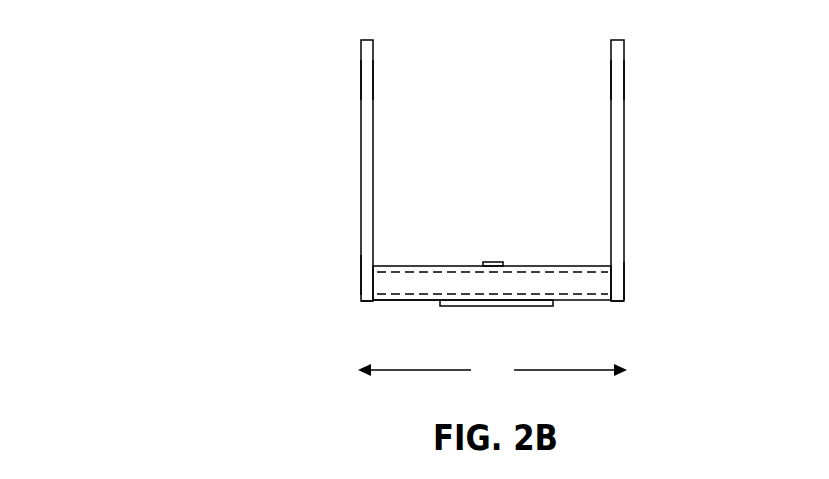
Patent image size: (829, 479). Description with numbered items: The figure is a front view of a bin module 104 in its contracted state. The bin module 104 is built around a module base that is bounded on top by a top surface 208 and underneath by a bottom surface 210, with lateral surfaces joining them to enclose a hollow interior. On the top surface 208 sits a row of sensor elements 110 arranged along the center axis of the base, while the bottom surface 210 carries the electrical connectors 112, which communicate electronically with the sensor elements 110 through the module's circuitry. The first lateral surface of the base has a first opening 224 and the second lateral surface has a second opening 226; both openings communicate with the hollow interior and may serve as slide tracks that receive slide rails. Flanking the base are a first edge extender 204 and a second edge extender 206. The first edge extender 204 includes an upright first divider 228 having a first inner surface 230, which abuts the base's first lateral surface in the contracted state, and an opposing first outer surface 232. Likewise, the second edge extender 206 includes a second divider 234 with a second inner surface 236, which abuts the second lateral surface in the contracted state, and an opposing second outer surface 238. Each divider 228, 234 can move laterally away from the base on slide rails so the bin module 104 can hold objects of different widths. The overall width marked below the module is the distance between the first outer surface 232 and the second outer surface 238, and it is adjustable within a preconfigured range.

The bin module 104 is at (168, 52).
The sensor elements 110 is at (492, 262).
The electrical connectors 112 is at (498, 306).
The first edge extender 204 is at (367, 302).
The second edge extender 206 is at (618, 303).
The top surface 208 is at (427, 265).
The bottom surface 210 is at (403, 301).
The first opening 224 is at (372, 275).
The second opening 226 is at (625, 290).
The first divider 228 is at (367, 173).
The first inner surface 230 is at (373, 78).
The first outer surface 232 is at (361, 78).
The second divider 234 is at (617, 169).
The second inner surface 236 is at (611, 80).
The second outer surface 238 is at (624, 84).